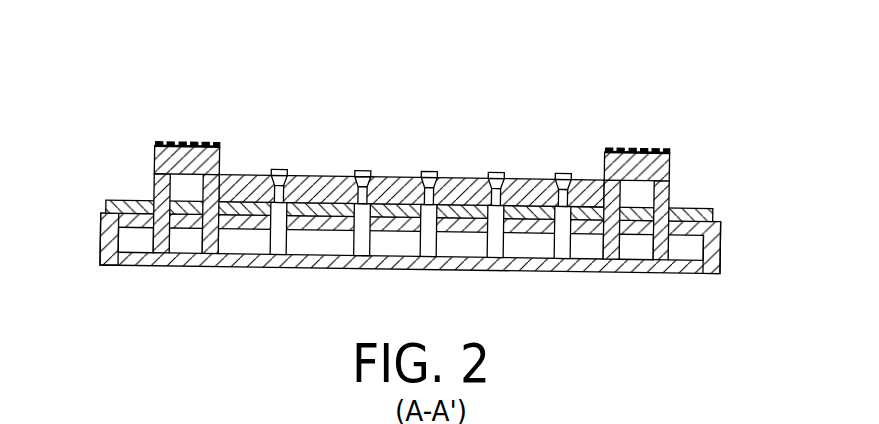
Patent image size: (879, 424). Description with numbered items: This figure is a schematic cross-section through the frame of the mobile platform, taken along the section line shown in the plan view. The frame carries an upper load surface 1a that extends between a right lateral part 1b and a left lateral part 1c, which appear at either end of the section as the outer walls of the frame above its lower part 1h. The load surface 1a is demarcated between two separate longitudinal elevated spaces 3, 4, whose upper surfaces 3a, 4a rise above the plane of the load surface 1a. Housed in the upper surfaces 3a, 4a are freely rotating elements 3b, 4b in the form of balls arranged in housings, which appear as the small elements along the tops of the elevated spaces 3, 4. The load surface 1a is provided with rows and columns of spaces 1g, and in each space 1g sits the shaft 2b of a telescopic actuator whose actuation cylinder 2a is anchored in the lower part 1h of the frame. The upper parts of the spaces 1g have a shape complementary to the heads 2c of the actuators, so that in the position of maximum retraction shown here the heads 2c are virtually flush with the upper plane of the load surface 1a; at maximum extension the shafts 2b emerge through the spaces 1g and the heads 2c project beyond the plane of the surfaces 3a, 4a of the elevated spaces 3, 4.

The upper load surface 1a is at (537, 173).
The right lateral part 1b is at (100, 237).
The left lateral part 1c is at (720, 239).
The spaces 1g is at (269, 166).
The lower part of the frame 1h is at (572, 264).
The actuation cylinders 2a is at (277, 236).
The shafts 2b is at (283, 168).
The heads 2c is at (276, 166).
The longitudinal elevated space 3 is at (158, 160).
The upper surface 3a is at (170, 141).
The freely rotating elements 3b is at (201, 141).
The longitudinal elevated space 4 is at (668, 172).
The upper surface 4a is at (658, 144).
The freely rotating elements 4b is at (641, 141).